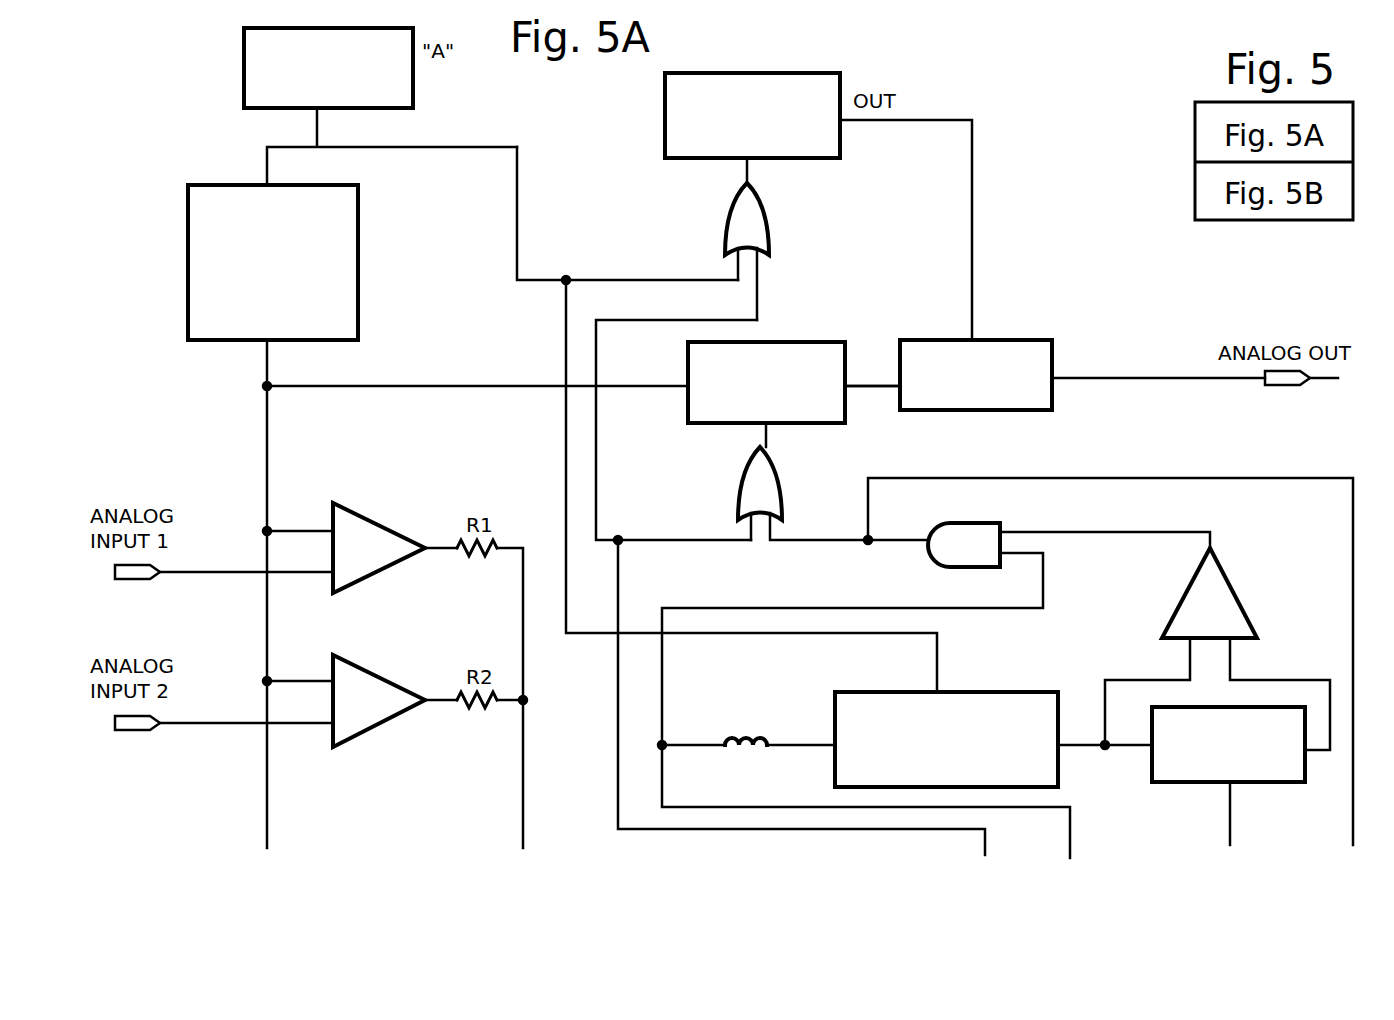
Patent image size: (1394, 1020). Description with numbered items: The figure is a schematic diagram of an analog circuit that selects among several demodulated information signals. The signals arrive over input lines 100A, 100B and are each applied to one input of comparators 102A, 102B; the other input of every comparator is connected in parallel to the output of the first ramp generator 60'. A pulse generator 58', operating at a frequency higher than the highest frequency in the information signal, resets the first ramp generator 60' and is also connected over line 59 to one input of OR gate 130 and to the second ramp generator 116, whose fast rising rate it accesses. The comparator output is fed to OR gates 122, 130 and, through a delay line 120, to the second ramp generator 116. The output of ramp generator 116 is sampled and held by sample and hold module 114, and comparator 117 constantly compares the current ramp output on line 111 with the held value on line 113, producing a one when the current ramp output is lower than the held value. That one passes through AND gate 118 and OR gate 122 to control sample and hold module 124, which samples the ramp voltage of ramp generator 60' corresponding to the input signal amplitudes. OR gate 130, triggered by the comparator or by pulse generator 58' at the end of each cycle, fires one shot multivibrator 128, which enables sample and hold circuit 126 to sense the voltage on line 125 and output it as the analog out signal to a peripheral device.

The pulse generator 58' is at (295, 68).
The line 59 is at (727, 419).
The first ramp generator 60' is at (242, 262).
The one shot multivibrator 128 is at (665, 135).
The OR gate 130 is at (769, 226).
The sample and hold module 124 is at (785, 342).
The line 125 is at (870, 392).
The sample and hold circuit 126 is at (1000, 340).
The OR gate 122 is at (833, 493).
The AND gate 118 is at (936, 675).
The comparator 117 is at (1222, 598).
The line 111 is at (1147, 691).
The line 113 is at (1280, 694).
The sample and hold module 114 is at (1265, 782).
The second ramp generator 116 is at (1058, 692).
The delay line 120 is at (770, 740).
The comparator 102A is at (388, 525).
The comparator 102B is at (388, 677).
The input line 100A is at (224, 561).
The input line 100B is at (224, 713).